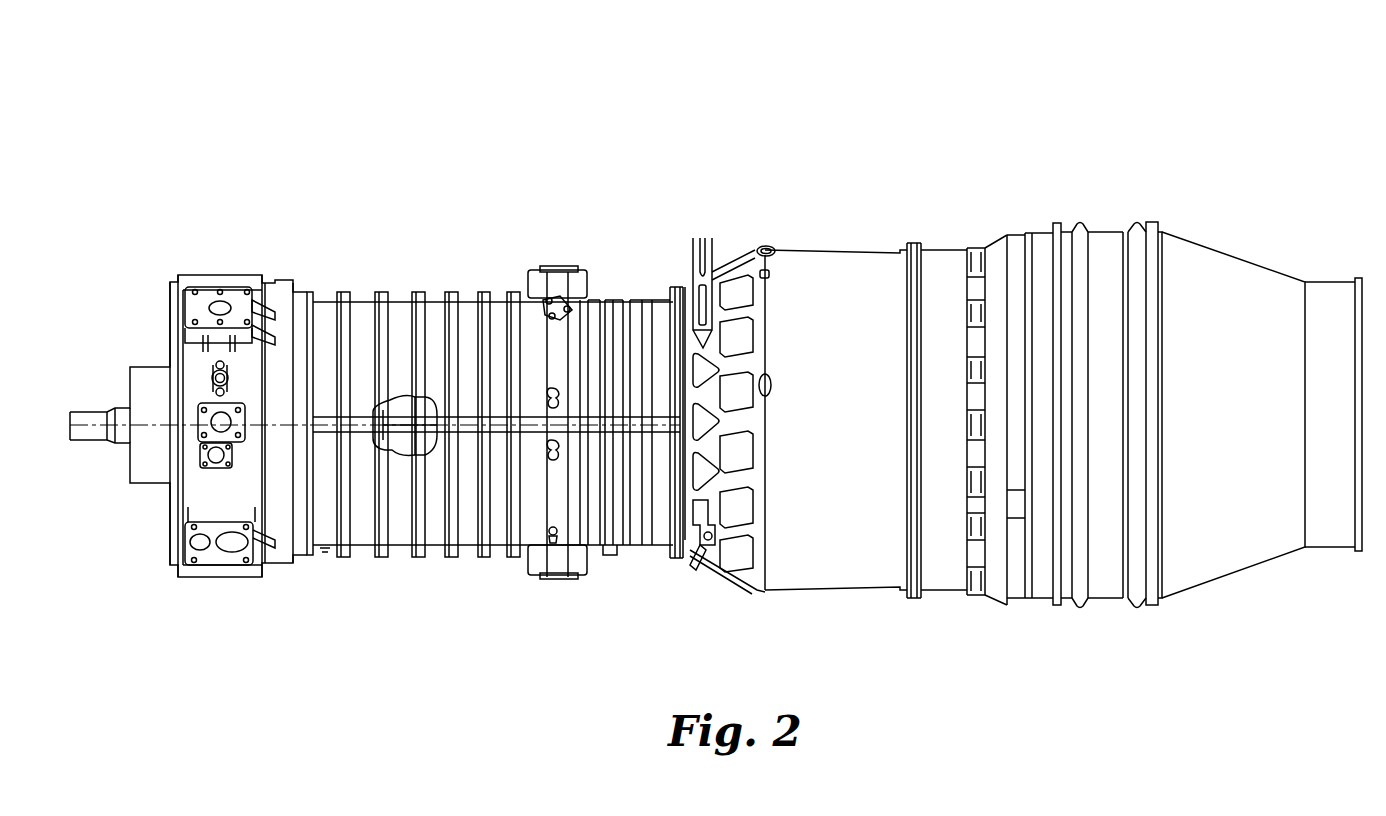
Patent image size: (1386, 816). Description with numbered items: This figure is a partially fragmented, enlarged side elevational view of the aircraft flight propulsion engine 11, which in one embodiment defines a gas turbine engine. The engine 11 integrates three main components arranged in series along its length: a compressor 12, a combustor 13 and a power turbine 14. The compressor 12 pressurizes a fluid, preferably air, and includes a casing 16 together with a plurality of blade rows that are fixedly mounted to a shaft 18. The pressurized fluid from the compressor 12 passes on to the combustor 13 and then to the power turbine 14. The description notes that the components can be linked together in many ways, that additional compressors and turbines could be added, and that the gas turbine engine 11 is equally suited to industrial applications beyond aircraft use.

The aircraft flight propulsion engine 11 is at (1283, 151).
The compressor 12 is at (399, 550).
The combustor 13 is at (842, 250).
The power turbine 14 is at (1113, 232).
The casing 16 is at (367, 292).
The shaft 18 is at (430, 418).